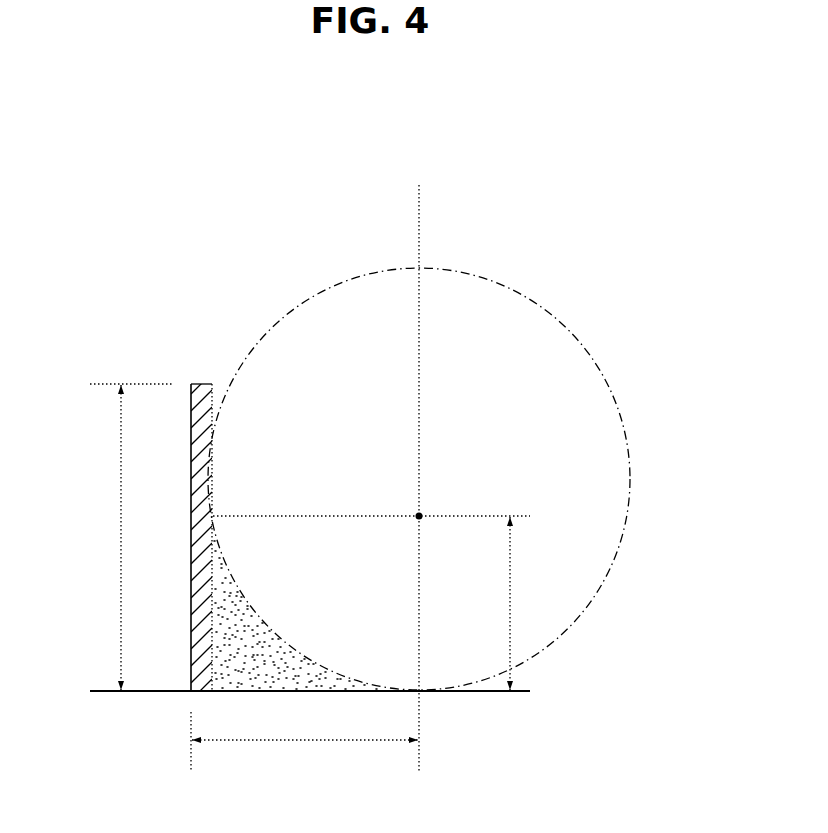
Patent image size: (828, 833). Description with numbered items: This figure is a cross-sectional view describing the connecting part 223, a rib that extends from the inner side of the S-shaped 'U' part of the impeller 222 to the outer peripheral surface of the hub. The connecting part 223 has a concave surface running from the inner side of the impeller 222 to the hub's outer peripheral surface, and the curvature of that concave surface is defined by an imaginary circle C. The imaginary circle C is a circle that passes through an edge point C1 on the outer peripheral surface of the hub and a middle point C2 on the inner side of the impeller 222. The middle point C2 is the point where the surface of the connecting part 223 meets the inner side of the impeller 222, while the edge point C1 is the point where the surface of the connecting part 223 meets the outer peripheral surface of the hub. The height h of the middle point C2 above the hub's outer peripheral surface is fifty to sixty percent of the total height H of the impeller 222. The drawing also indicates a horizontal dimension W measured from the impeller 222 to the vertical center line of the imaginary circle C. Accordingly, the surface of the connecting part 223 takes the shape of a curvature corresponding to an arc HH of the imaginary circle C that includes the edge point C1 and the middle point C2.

The impeller 222 is at (201, 389).
The connecting part 223 is at (228, 665).
The imaginary circle C is at (566, 328).
The edge point C1 is at (421, 692).
The middle point C2 is at (212, 515).
The arc HH is at (265, 618).
The total height of the impeller H is at (131, 537).
The height of the middle point h is at (498, 603).
The width from side wall to circle center W is at (304, 741).